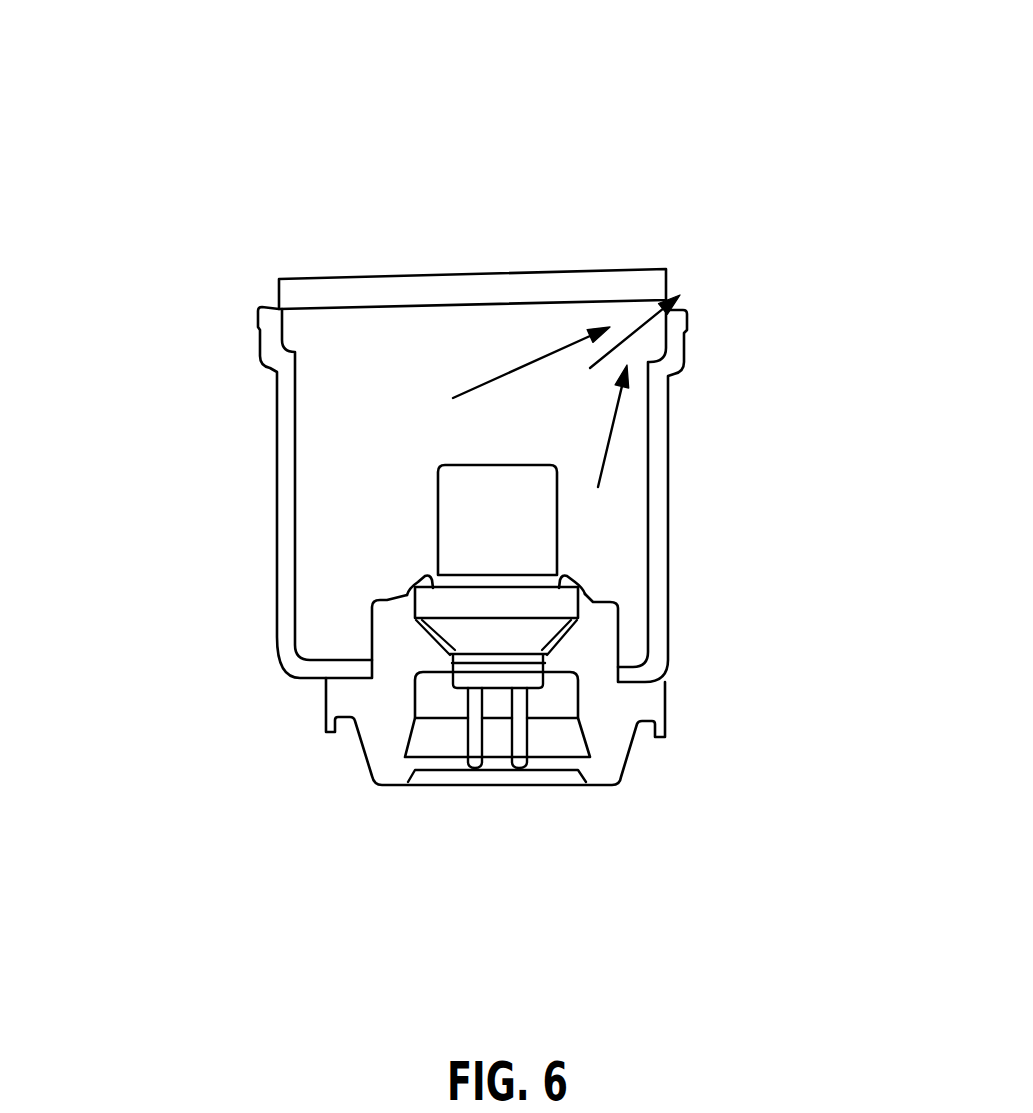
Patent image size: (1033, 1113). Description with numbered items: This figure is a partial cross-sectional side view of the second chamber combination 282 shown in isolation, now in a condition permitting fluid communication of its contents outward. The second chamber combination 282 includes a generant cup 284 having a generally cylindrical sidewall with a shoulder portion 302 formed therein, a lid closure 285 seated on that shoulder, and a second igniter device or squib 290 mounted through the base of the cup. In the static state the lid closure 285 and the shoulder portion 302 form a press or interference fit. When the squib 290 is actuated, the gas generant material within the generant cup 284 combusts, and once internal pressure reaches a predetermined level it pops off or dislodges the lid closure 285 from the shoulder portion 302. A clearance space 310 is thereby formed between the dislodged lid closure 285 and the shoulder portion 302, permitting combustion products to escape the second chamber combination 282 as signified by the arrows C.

The second chamber combination 282 is at (547, 190).
The lid closure 285 is at (402, 293).
The generant cup 284 is at (282, 557).
The shoulder portion 302 is at (672, 355).
The clearance space 310 is at (686, 300).
The second igniter device or squib 290 is at (497, 672).
The arrows C is at (585, 377).